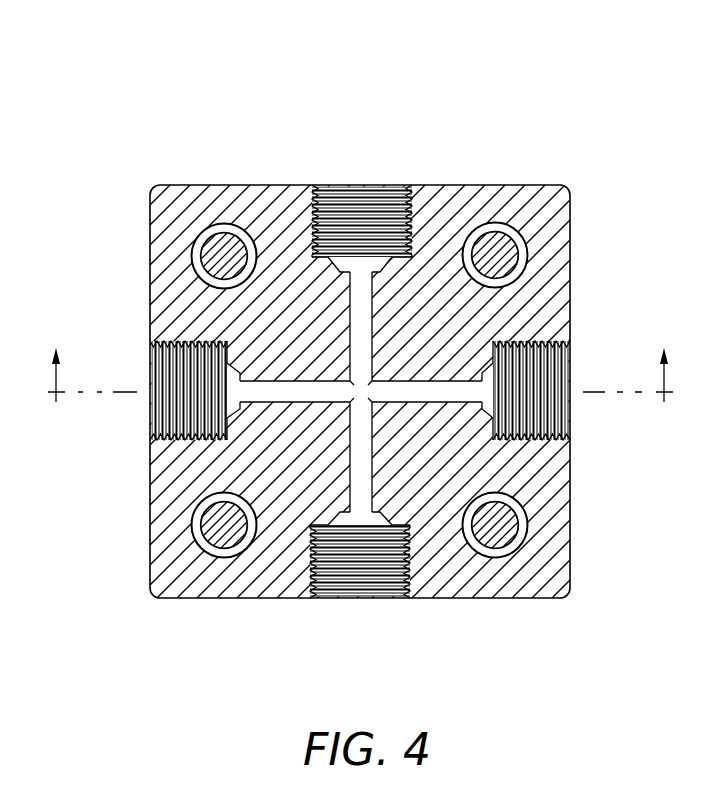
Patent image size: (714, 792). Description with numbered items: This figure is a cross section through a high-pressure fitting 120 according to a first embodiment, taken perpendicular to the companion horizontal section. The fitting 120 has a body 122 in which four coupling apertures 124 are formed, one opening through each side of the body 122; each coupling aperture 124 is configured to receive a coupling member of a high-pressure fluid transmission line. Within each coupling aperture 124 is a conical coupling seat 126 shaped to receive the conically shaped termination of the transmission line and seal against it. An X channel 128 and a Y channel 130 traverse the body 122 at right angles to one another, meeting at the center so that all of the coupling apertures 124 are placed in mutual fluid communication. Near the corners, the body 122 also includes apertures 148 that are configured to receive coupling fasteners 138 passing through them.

The high-pressure fitting 120 is at (160, 77).
The body 122 is at (165, 232).
The coupling apertures 124 is at (296, 205).
The conical coupling seats 126 is at (378, 257).
The X channel 128 is at (305, 385).
The Y channel 130 is at (362, 322).
The coupling fasteners 138 is at (223, 247).
The apertures 148 is at (237, 228).